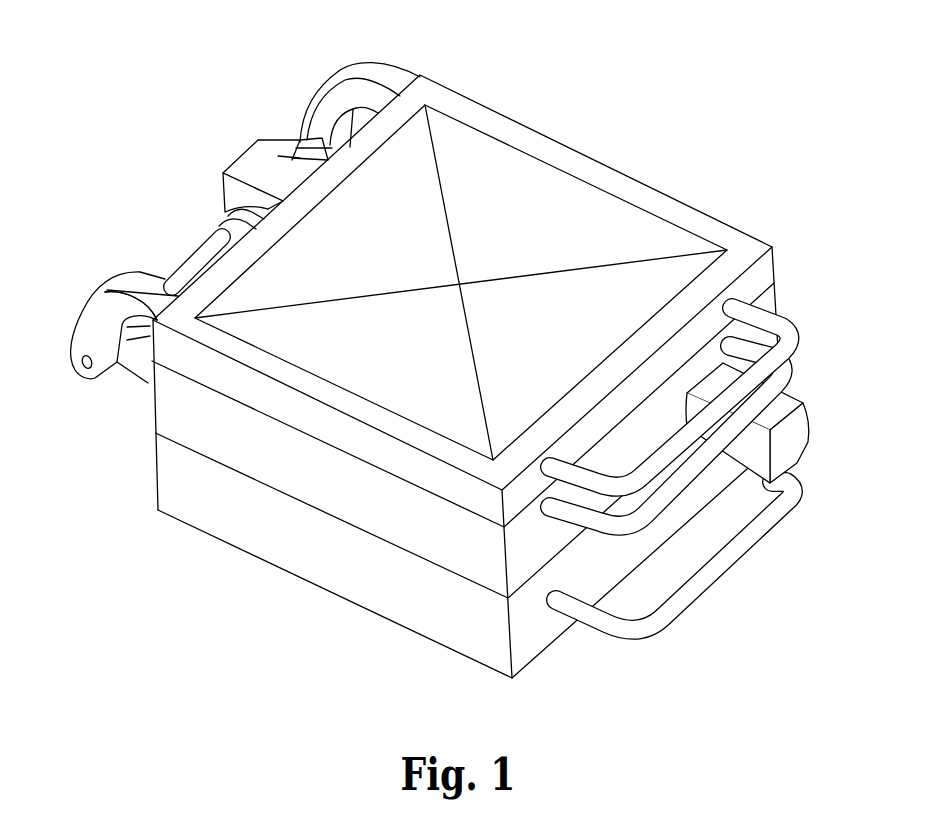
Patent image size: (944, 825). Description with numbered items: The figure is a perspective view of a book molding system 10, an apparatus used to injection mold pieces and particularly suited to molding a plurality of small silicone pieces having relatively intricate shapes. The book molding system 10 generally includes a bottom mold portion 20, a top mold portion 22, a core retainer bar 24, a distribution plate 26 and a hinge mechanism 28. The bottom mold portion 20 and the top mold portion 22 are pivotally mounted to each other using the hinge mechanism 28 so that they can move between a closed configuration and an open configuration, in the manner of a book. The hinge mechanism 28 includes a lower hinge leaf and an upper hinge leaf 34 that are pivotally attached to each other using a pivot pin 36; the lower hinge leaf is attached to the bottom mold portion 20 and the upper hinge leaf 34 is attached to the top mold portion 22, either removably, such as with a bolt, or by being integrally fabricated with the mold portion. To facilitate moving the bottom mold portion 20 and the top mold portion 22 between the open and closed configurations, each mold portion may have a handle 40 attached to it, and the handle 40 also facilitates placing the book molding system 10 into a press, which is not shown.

The book molding system 10 is at (234, 579).
The bottom mold portion 20 is at (527, 648).
The top mold portion 22 is at (150, 408).
The core retainer bar 24 is at (803, 433).
The distribution plate 26 is at (732, 225).
The hinge mechanism 28 is at (88, 300).
The upper hinge leaf 34 is at (372, 72).
The pivot pin 36 is at (200, 258).
The handle 40 is at (716, 469).